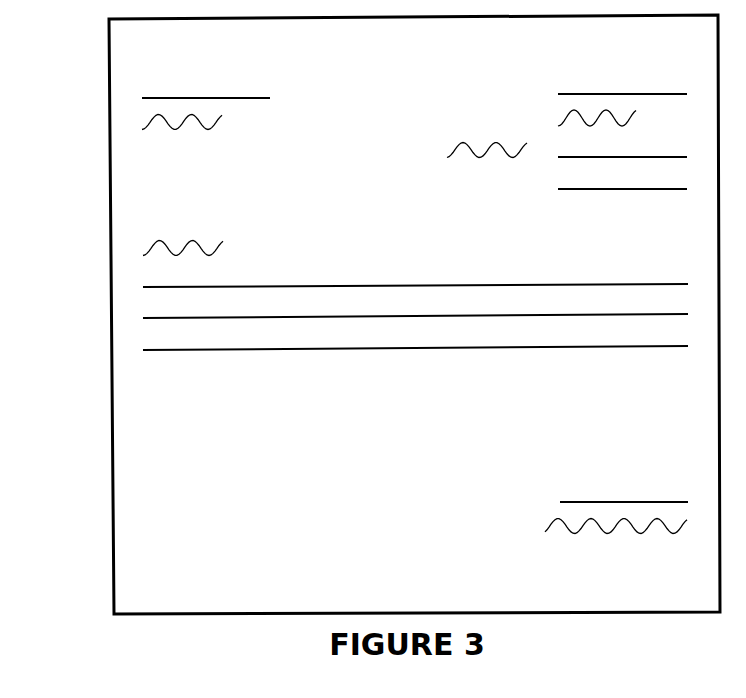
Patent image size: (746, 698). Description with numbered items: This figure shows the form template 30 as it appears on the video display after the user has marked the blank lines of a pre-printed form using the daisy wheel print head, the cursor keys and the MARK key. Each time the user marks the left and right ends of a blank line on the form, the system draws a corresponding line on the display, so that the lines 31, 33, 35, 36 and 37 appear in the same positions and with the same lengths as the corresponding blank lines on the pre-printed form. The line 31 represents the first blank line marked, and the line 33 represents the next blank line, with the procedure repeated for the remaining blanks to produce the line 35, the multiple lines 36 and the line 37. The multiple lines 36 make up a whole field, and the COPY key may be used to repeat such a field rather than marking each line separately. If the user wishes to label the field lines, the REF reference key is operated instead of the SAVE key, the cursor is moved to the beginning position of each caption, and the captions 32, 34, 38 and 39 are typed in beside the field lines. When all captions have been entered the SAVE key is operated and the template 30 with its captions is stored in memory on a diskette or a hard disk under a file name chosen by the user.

The form template 30 is at (109, 67).
The line 31 is at (254, 98).
The caption 32 is at (205, 130).
The line 33 is at (605, 94).
The caption 34 is at (558, 127).
The line 35 is at (638, 157).
The lines 36 is at (478, 284).
The line 37 is at (593, 502).
The caption 38 is at (577, 535).
The caption 39 is at (188, 240).